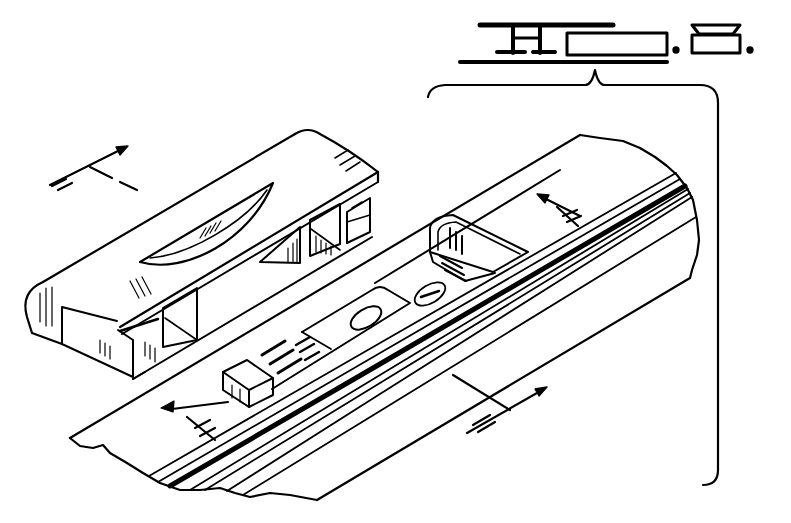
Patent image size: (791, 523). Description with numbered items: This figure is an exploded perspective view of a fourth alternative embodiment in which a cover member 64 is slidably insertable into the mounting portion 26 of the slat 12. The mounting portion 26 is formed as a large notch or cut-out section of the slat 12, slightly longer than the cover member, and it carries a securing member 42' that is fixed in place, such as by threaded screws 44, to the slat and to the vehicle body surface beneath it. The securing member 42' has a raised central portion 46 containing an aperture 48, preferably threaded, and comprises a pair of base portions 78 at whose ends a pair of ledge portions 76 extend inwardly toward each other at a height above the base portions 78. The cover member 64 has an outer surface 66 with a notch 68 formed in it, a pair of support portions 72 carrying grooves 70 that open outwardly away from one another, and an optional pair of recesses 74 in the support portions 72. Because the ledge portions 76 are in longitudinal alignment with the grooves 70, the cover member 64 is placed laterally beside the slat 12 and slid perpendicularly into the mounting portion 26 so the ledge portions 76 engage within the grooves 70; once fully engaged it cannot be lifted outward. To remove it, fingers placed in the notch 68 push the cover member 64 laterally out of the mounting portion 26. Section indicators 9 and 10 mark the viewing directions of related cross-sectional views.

The section line 9- 9 is at (375, 311).
The section line 10- 10 is at (298, 286).
The slat 12 is at (104, 446).
The mounting portion 26 is at (396, 275).
The securing member 42' is at (284, 327).
The threaded screws 44 is at (315, 360).
The raised central portion 46 is at (328, 322).
The aperture 48 is at (366, 316).
The cover member 64 is at (241, 152).
The outer surface 66 is at (296, 141).
The notch 68 is at (185, 243).
The grooves 70 is at (368, 199).
The support portions 72 is at (377, 213).
The recesses 74 is at (323, 210).
The ledge portions 76 is at (462, 255).
The base portions 78 is at (468, 268).